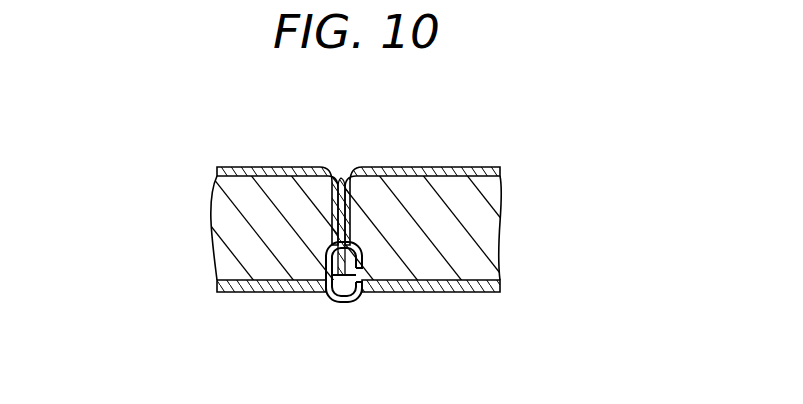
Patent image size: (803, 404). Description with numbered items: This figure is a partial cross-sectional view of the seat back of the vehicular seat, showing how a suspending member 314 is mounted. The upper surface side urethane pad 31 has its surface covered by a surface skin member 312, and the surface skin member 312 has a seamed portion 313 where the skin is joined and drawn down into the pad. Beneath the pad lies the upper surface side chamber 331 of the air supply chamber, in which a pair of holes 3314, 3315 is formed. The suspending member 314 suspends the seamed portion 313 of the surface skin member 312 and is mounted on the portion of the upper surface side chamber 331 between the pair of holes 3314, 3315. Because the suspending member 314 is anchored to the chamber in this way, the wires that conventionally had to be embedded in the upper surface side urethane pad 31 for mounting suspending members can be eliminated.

The upper surface side urethane pad 31 is at (485, 219).
The surface skin member 312 is at (474, 167).
The seamed portion 313 is at (337, 211).
The suspending member 314 is at (341, 298).
The upper surface side chamber 331 is at (485, 293).
The hole 3314 is at (330, 299).
The hole 3315 is at (361, 300).